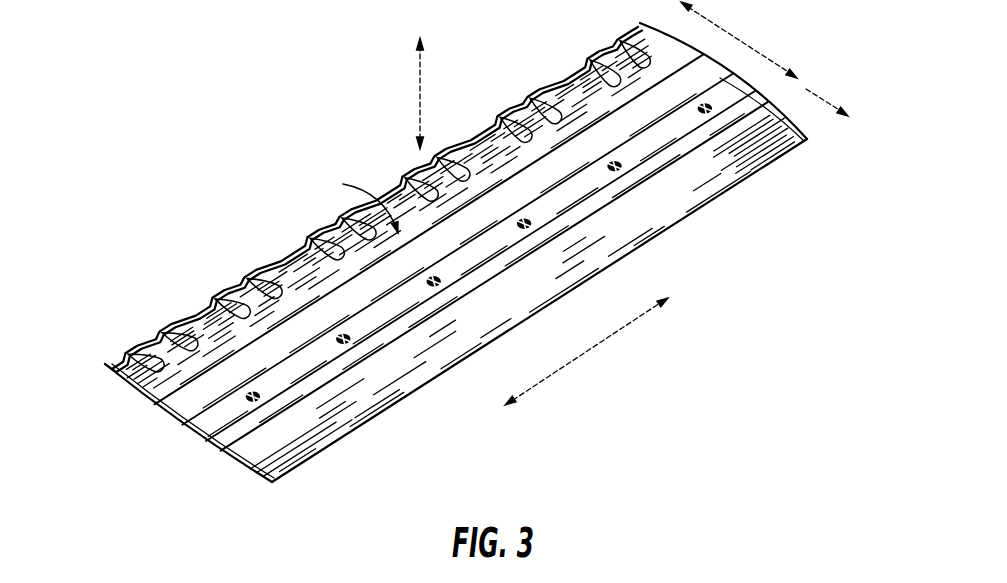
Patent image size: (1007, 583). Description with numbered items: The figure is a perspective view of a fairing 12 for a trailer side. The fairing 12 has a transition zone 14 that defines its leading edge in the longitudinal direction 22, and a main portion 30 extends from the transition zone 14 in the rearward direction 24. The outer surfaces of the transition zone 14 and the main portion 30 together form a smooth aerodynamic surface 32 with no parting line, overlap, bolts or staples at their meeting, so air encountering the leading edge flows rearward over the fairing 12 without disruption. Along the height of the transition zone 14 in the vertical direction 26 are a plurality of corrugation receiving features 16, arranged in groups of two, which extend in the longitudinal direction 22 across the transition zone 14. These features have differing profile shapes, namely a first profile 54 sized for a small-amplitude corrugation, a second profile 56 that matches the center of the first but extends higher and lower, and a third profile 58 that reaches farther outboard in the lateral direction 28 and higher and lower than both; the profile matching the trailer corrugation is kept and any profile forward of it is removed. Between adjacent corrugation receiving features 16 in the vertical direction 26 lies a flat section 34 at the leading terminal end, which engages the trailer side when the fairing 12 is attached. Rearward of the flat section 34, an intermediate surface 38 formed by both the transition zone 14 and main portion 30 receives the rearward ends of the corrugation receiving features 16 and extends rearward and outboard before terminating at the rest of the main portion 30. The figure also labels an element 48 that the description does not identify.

The fairing 12 is at (247, 75).
The transition zone 14 is at (106, 370).
The corrugation receiving features 16 is at (255, 266).
The longitudinal direction 22 is at (729, 36).
The rearward direction 24 is at (827, 102).
The vertical direction 26 is at (585, 348).
The lateral direction 28 is at (418, 97).
The main portion 30 is at (218, 418).
The aerodynamic surface 32 is at (356, 202).
The flat section 34 is at (293, 257).
The intermediate surface 38 is at (160, 380).
The strip end 48 is at (134, 346).
The first profile 54 is at (543, 98).
The second profile 56 is at (520, 107).
The third profile 58 is at (556, 100).